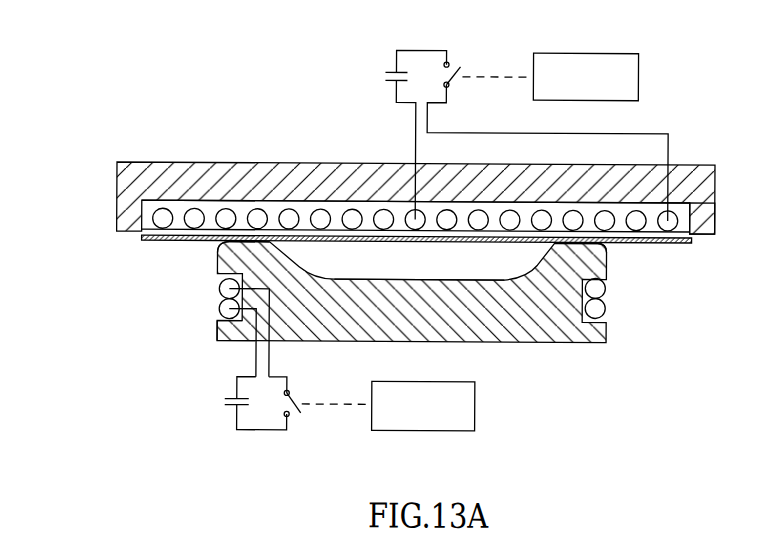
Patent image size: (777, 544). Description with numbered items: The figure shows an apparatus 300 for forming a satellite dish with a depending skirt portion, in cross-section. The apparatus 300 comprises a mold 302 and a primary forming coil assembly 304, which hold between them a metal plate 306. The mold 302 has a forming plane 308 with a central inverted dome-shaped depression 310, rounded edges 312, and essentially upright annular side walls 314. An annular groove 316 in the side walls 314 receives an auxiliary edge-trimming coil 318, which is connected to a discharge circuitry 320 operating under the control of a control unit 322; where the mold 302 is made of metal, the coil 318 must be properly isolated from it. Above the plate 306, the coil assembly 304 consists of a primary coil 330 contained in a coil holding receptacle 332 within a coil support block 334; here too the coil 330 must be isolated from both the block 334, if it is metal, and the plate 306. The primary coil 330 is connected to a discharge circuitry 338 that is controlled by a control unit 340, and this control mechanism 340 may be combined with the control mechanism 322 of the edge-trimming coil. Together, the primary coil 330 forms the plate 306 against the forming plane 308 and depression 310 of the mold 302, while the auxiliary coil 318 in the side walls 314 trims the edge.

The apparatus 300 is at (245, 142).
The mold 302 is at (565, 328).
The primary forming coil assembly 304 is at (108, 202).
The metal plate 306 is at (165, 241).
The forming plane 308 is at (605, 246).
The central inverted dome-shaped depression 310 is at (410, 275).
The rounded edges 312 is at (218, 254).
The annular side walls 314 is at (218, 329).
The annular groove 316 is at (608, 316).
The auxiliary edge-trimming coil 318 is at (222, 308).
The discharge circuitry 320 is at (300, 432).
The control unit 322 is at (477, 400).
The primary coil 330 is at (163, 213).
The coil holding receptacle 332 is at (557, 198).
The coil support block 334 is at (686, 180).
The discharge circuitry 338 is at (362, 67).
The control unit 340 is at (609, 48).